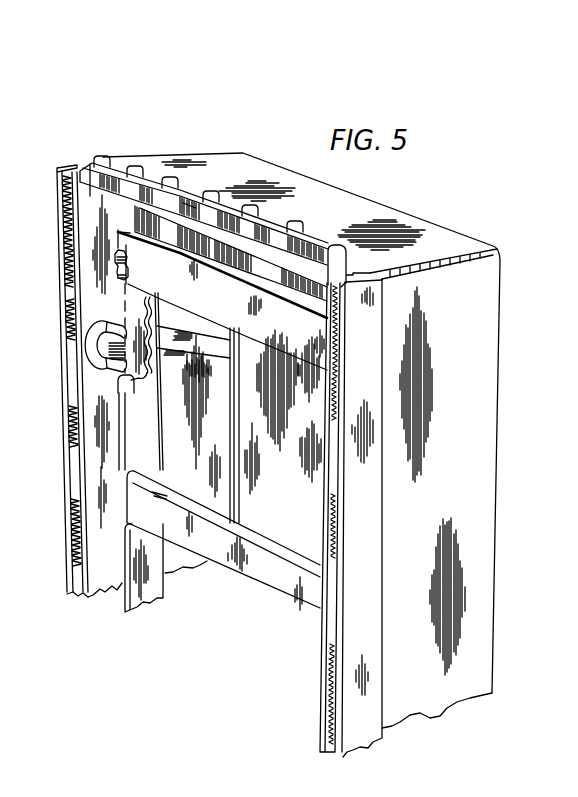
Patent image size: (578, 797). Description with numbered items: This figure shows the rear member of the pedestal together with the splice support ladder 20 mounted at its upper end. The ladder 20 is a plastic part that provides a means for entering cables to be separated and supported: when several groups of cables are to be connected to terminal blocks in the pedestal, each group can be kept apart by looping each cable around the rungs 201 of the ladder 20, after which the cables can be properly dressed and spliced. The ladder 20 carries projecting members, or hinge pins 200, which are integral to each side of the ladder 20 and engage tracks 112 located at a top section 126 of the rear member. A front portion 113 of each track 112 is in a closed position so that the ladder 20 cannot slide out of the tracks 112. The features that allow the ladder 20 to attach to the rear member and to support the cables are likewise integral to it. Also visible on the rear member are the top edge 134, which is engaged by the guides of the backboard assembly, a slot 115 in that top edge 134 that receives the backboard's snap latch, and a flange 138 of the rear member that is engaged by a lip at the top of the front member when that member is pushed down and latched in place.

The splice support ladder 20 is at (117, 231).
The track 112 is at (117, 378).
The front portion of track 113 is at (90, 330).
The slot 115 is at (189, 205).
The top section 126 is at (54, 211).
The top edge 134 is at (151, 202).
The flange 138 is at (270, 238).
The hinge pin 200 is at (114, 264).
The rung 201 is at (242, 581).